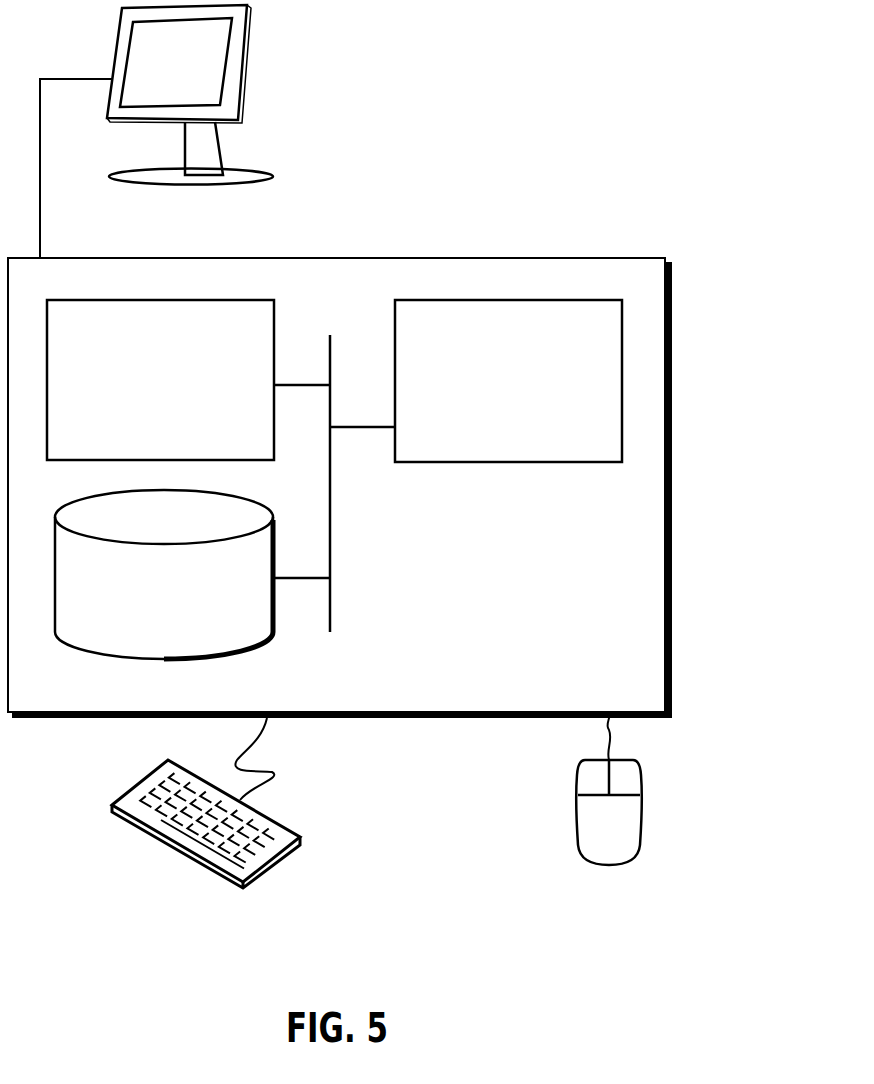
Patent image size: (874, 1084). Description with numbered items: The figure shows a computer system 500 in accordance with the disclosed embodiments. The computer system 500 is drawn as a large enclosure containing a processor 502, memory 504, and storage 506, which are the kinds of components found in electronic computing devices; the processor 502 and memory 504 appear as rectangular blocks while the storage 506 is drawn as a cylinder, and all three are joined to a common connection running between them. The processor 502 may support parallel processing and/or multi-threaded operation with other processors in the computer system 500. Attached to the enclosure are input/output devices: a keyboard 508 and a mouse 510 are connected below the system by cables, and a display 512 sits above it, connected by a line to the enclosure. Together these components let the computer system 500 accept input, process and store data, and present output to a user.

The computer system 500 is at (383, 238).
The processor 502 is at (508, 381).
The memory 504 is at (160, 380).
The storage 506 is at (164, 574).
The keyboard 508 is at (132, 823).
The mouse 510 is at (609, 790).
The display 512 is at (190, 109).